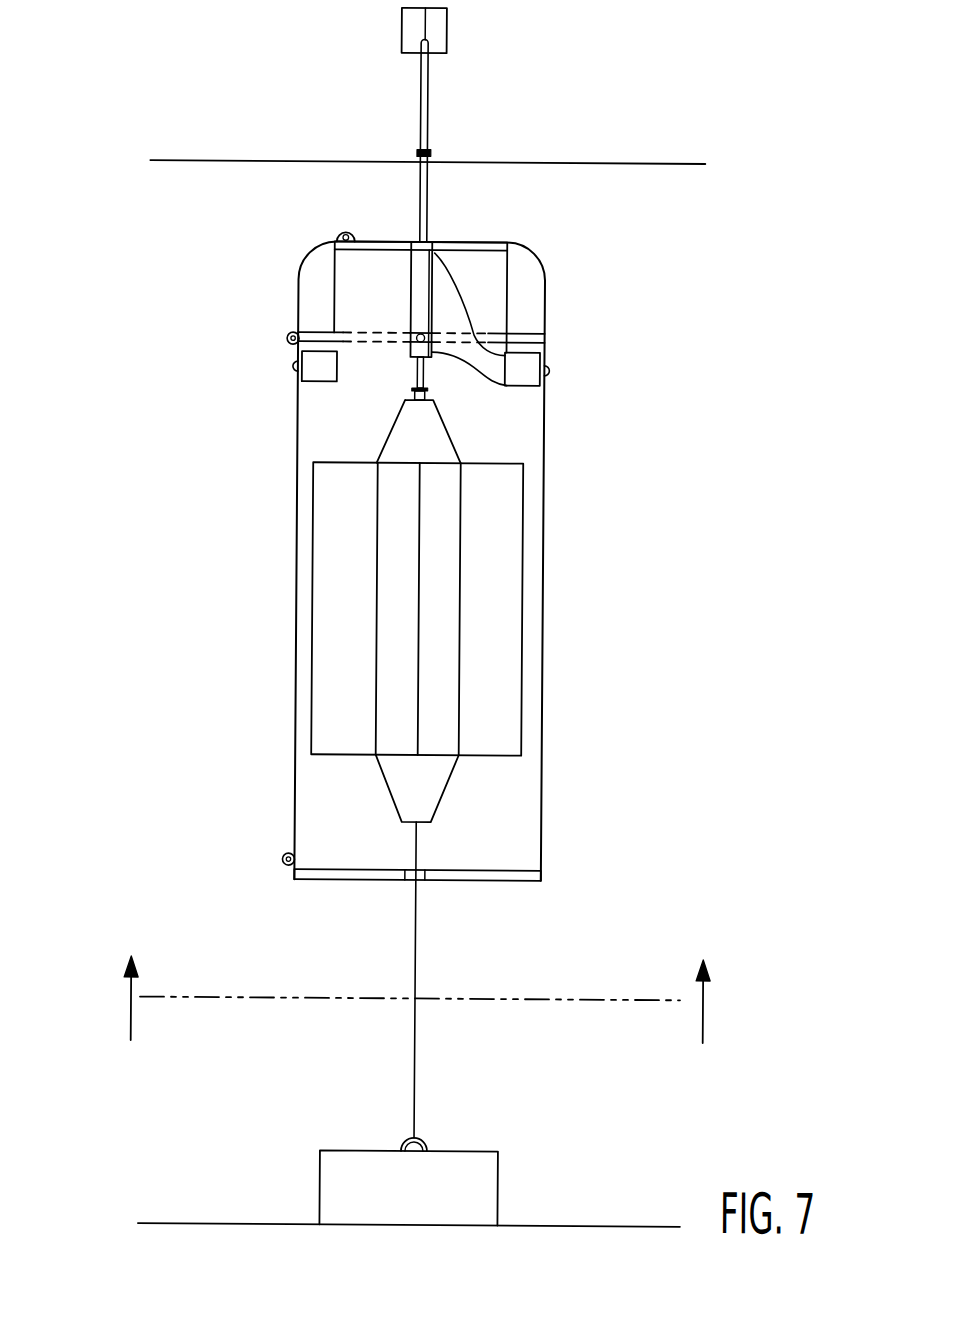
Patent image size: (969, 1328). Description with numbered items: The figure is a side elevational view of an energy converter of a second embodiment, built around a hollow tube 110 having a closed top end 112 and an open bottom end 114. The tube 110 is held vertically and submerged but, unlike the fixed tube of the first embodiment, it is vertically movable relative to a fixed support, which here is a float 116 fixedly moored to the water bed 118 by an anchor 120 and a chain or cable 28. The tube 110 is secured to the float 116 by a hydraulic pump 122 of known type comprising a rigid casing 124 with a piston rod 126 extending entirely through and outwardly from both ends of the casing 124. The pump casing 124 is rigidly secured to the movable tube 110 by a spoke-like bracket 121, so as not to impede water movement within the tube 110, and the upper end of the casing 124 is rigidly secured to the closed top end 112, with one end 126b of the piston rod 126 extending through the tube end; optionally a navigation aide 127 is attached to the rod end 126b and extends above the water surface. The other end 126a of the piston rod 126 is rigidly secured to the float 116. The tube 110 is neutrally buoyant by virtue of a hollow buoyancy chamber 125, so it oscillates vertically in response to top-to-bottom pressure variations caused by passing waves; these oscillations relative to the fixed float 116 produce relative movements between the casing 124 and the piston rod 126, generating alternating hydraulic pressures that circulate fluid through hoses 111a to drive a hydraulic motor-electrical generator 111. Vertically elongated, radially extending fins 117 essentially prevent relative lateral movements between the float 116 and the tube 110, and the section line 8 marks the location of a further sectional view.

The navigation aide 127 is at (424, 78).
The piston rod 126 is at (416, 197).
The upper end of piston rod 126b is at (412, 152).
The lower end of piston rod 126a is at (411, 396).
The hollow tube 110 is at (544, 821).
The closed top end 112 is at (458, 242).
The hollow buoyancy chamber 125 is at (321, 319).
The spoke-like bracket 121 is at (366, 343).
The hydraulic pump 122 is at (421, 300).
The rigid casing 124 is at (429, 318).
The hoses 111a is at (472, 302).
The hydraulic motor-electrical generator 111 is at (520, 385).
The float 116 is at (437, 537).
The fins 117 is at (333, 700).
The open bottom end 114 is at (349, 882).
The line 28 is at (418, 1055).
The section line 8- 8 is at (416, 1017).
The anchor 120 is at (486, 1183).
The water bed 118 is at (211, 1225).